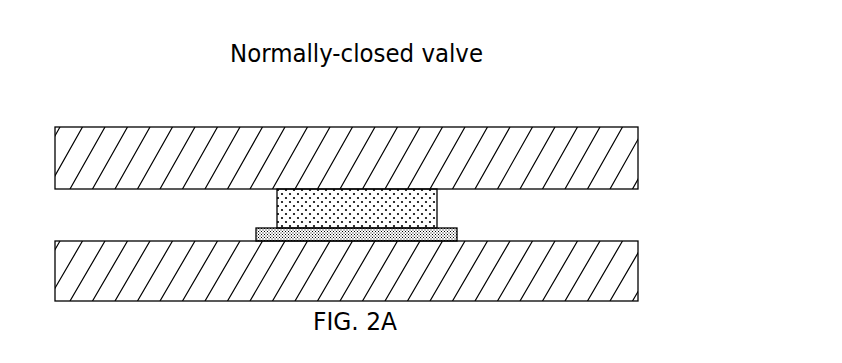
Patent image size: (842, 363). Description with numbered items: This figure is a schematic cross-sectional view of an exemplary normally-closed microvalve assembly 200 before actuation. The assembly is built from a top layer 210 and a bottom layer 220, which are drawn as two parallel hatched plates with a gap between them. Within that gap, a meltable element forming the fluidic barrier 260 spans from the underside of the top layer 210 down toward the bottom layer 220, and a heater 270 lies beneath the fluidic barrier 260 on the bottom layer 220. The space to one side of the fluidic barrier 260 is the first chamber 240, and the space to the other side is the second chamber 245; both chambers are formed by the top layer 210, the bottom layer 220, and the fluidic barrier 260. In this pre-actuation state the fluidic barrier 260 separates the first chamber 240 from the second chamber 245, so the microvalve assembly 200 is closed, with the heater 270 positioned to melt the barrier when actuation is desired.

The normally-closed microvalve assembly 200 is at (645, 99).
The top layer 210 is at (636, 155).
The bottom layer 220 is at (637, 268).
The first chamber 240 is at (170, 227).
The second chamber 245 is at (575, 228).
The fluidic barrier 260 is at (440, 204).
The heater 270 is at (406, 242).